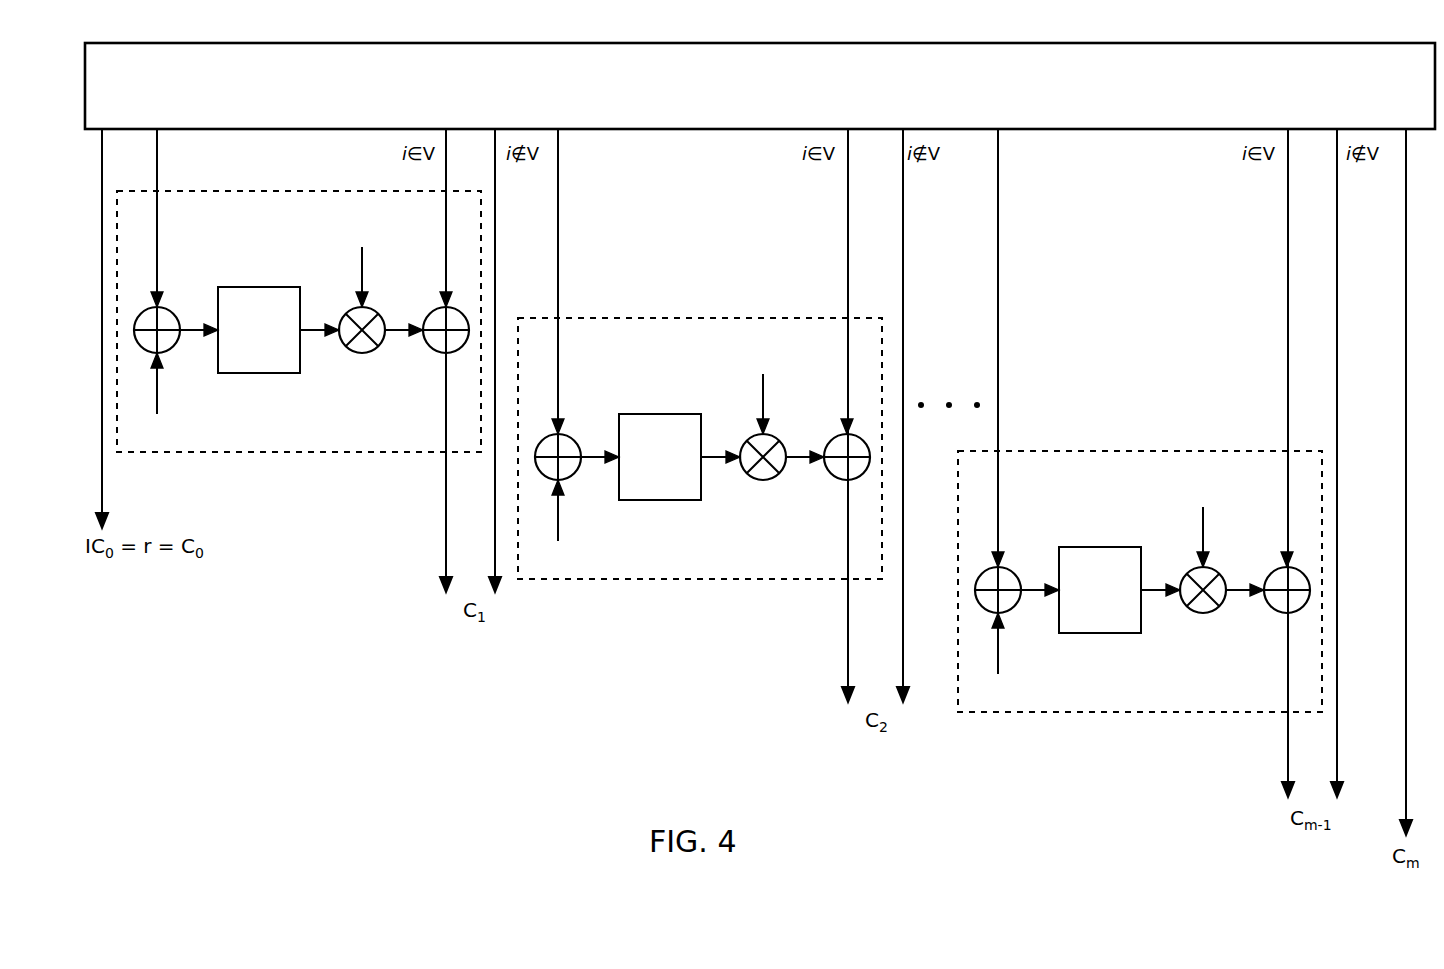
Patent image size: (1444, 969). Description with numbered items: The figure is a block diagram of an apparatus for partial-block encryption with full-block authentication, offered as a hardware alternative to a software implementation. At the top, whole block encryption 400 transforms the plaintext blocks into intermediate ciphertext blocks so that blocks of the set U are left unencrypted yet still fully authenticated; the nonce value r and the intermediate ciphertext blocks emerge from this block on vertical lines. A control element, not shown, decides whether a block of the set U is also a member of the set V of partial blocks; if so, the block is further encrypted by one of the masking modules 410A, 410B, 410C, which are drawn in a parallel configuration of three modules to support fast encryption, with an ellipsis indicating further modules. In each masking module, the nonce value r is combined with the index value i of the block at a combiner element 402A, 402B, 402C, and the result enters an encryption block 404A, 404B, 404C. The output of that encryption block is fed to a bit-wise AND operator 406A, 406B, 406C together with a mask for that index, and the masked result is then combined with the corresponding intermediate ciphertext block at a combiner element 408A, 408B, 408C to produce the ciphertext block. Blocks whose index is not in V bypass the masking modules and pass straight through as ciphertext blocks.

The whole block encryption block 400 is at (1113, 43).
The combiner element 402A is at (179, 347).
The encryption block 404A is at (270, 314).
The bit-wise AND operator 406A is at (363, 308).
The combiner element 408A is at (424, 310).
The masking module 410A is at (299, 305).
The combiner element 402B is at (580, 474).
The encryption block 404B is at (671, 441).
The bit-wise AND operator 406B is at (764, 435).
The combiner element 408B is at (825, 437).
The masking module 410B is at (700, 432).
The combiner element 402C is at (1018, 607).
The encryption block 404C is at (1111, 574).
The bit-wise AND operator 406C is at (1203, 568).
The combiner element 408C is at (1265, 570).
The masking module 410C is at (1140, 565).